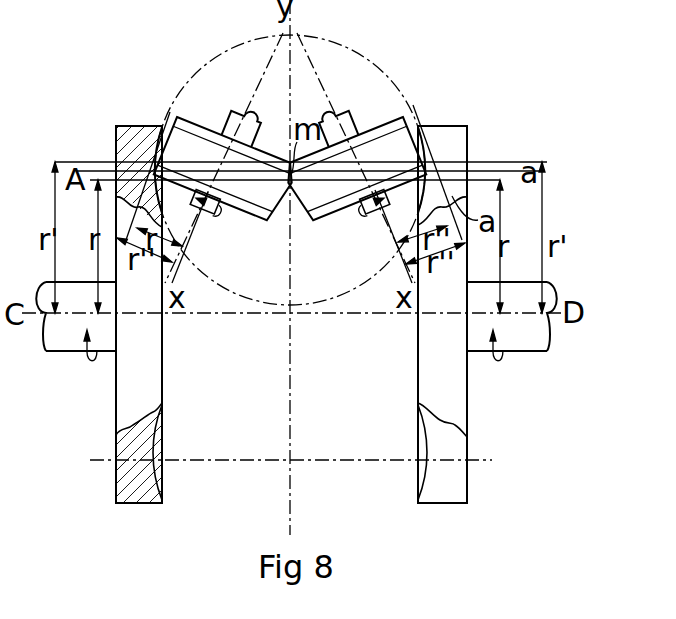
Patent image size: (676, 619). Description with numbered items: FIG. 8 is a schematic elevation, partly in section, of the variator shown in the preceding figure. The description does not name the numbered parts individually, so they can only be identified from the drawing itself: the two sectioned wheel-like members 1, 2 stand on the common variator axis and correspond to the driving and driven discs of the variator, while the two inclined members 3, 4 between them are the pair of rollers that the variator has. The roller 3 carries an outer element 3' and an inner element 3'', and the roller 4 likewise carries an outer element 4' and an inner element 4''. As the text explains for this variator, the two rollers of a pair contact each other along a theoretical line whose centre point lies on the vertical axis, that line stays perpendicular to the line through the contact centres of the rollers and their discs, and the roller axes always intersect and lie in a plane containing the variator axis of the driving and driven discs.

The first wheel 1 is at (128, 150).
The second wheel 2 is at (452, 148).
The first arm 3 is at (226, 198).
The first arm cutting insert 3' is at (258, 116).
The first arm pivot 3'' is at (238, 239).
The second arm 4 is at (354, 193).
The second arm cutting insert 4' is at (329, 116).
The second arm pivot 4'' is at (344, 239).